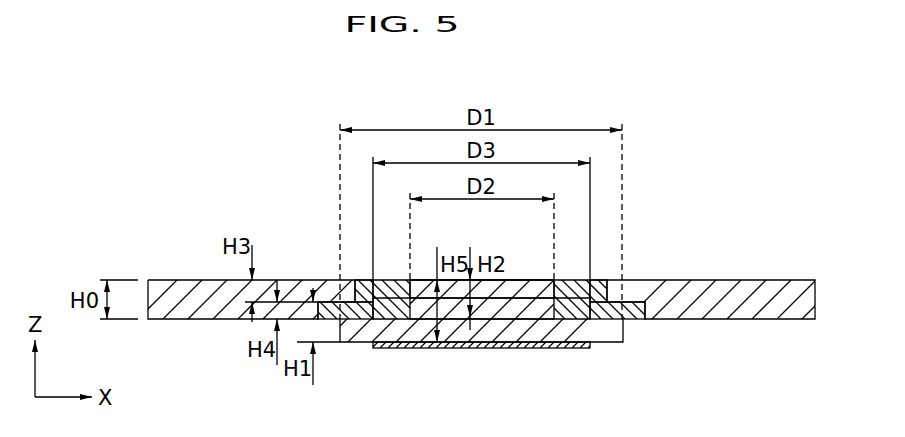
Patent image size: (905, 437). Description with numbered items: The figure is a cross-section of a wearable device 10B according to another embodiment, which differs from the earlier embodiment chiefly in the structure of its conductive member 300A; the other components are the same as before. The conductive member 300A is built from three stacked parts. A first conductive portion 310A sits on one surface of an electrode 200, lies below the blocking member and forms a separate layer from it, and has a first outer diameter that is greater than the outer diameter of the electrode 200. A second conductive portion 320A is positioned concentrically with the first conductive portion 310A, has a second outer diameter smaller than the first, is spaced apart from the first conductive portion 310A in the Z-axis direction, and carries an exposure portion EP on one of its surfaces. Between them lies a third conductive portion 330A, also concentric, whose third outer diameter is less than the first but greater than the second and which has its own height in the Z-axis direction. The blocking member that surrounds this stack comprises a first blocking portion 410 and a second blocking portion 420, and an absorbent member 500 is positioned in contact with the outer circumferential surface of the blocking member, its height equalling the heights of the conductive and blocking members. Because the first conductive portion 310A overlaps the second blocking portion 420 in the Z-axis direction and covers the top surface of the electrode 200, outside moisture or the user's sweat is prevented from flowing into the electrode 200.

The wearable device 10B is at (160, 118).
The absorbent member 500 is at (729, 287).
The first blocking portion 410 is at (589, 293).
The second blocking portion 420 is at (630, 317).
The conductive member 300A is at (444, 305).
The first conductive portion 310A is at (609, 333).
The second conductive portion 320A is at (488, 288).
The third conductive portion 330A is at (573, 303).
The exposure portion EP is at (422, 280).
The electrode 200 is at (404, 345).